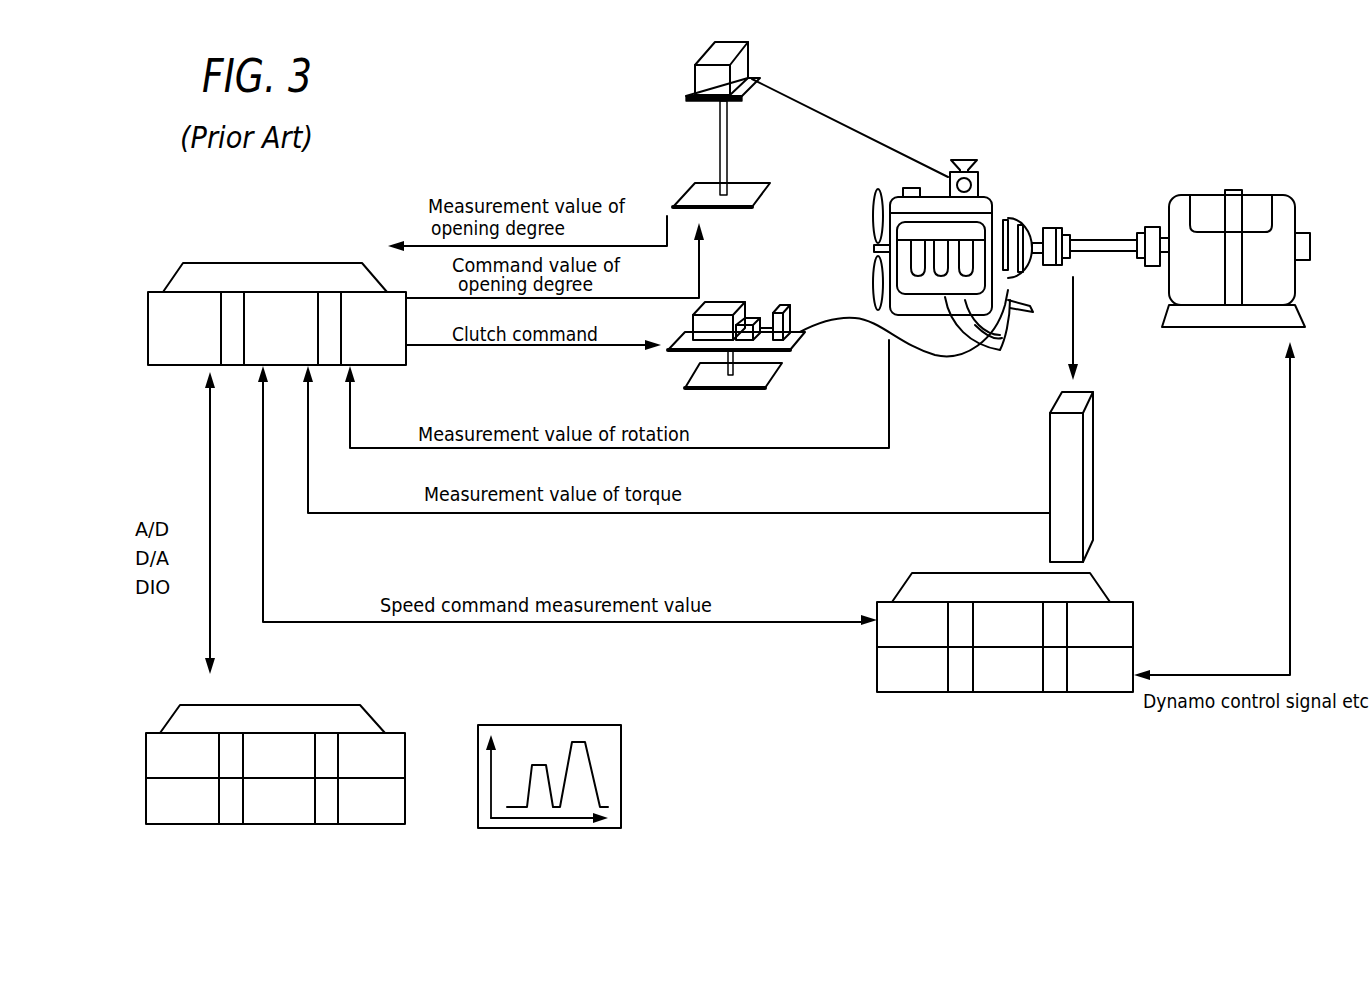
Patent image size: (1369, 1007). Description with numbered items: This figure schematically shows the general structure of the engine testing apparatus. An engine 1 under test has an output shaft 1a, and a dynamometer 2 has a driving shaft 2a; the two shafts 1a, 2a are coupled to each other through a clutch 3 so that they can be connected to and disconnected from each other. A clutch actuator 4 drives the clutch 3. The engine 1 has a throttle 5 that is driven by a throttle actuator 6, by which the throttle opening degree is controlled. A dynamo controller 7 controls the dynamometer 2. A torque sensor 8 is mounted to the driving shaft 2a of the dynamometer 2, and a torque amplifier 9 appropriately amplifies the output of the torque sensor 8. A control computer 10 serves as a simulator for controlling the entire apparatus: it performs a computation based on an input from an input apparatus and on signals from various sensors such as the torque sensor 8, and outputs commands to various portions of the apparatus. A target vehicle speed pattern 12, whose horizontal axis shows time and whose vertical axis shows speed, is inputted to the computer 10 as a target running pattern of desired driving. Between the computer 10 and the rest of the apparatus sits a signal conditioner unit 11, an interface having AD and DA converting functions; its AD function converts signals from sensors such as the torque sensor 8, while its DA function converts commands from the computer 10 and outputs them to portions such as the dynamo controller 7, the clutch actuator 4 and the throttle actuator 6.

The engine 1 is at (992, 200).
The output shaft 1a is at (1005, 288).
The dynamometer 2 is at (1296, 198).
The driving shaft 2a is at (1102, 256).
The clutch 3 is at (1018, 225).
The clutch actuator 4 is at (730, 300).
The throttle 5 is at (962, 160).
The throttle actuator 6 is at (742, 65).
The dynamo controller 7 is at (1102, 598).
The torque sensor 8 is at (1060, 228).
The torque amplifier 9 is at (1088, 470).
The control computer 10 is at (146, 757).
The signal conditioner unit 11 is at (218, 270).
The target vehicle speed pattern 12 is at (621, 762).